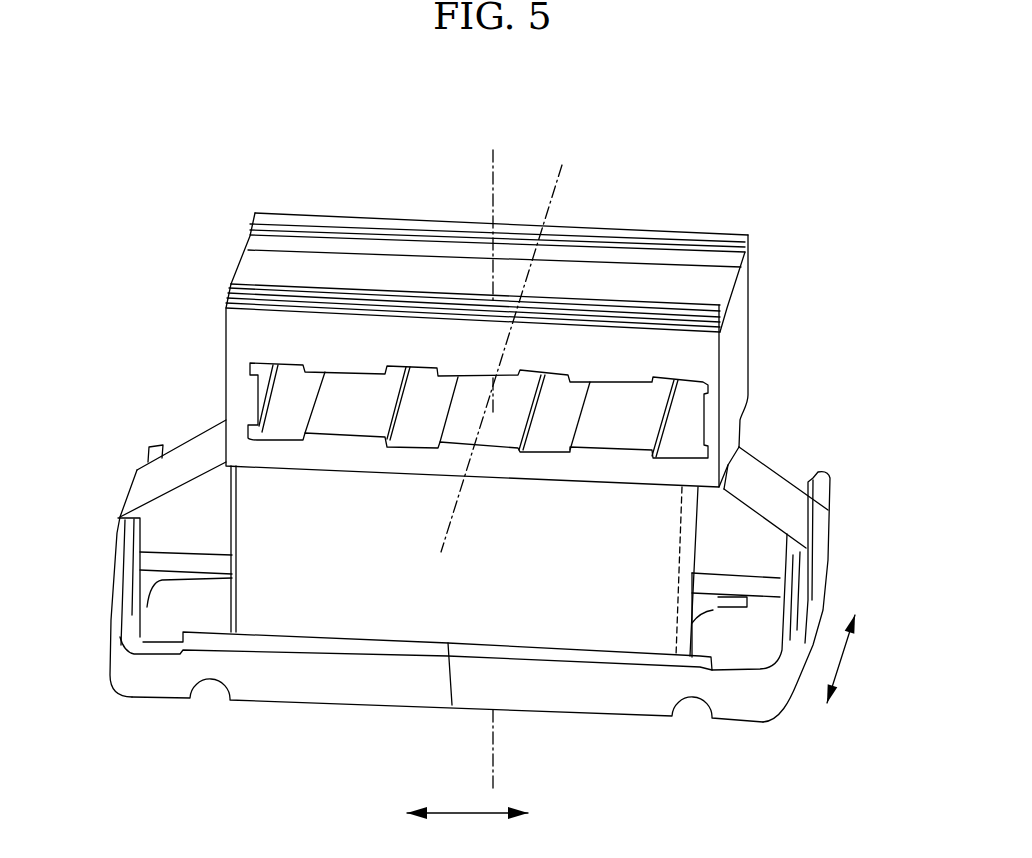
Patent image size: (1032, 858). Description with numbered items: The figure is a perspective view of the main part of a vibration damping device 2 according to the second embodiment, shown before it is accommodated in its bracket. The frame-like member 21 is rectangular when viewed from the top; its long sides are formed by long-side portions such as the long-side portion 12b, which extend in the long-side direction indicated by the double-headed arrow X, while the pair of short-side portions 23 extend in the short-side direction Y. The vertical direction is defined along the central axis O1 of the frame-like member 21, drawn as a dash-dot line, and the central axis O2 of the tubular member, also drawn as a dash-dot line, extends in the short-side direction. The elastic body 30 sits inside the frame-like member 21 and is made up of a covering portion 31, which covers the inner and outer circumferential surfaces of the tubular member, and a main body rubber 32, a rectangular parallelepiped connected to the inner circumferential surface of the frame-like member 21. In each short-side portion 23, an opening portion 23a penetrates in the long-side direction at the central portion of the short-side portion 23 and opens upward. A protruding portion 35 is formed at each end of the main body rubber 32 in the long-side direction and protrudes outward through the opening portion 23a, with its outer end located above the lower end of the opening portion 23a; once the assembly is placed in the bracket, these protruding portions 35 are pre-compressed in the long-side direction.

The vibration damping device 2 is at (712, 142).
The elastic body 30 is at (753, 224).
The covering portion 31 is at (745, 292).
The main body rubber 32 is at (665, 527).
The protruding portion 35 is at (207, 478).
The frame-like member 21 is at (125, 699).
The short-side portion 23 is at (127, 535).
The opening portion 23a is at (145, 588).
The long-side portion 12b is at (320, 683).
The central axis O1 is at (493, 158).
The central axis O2 is at (566, 178).